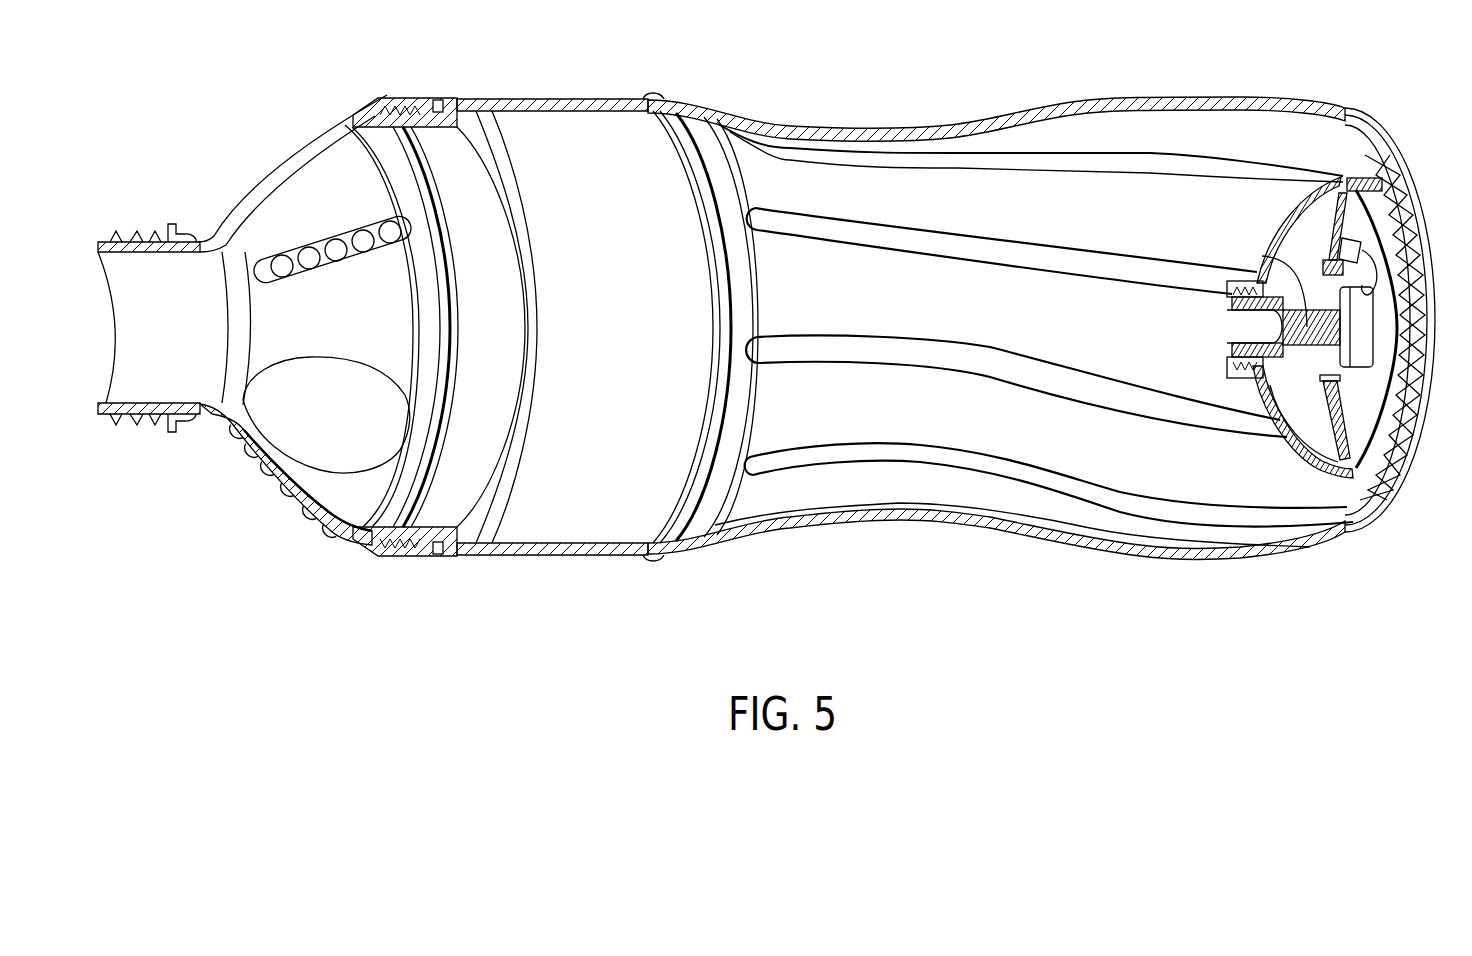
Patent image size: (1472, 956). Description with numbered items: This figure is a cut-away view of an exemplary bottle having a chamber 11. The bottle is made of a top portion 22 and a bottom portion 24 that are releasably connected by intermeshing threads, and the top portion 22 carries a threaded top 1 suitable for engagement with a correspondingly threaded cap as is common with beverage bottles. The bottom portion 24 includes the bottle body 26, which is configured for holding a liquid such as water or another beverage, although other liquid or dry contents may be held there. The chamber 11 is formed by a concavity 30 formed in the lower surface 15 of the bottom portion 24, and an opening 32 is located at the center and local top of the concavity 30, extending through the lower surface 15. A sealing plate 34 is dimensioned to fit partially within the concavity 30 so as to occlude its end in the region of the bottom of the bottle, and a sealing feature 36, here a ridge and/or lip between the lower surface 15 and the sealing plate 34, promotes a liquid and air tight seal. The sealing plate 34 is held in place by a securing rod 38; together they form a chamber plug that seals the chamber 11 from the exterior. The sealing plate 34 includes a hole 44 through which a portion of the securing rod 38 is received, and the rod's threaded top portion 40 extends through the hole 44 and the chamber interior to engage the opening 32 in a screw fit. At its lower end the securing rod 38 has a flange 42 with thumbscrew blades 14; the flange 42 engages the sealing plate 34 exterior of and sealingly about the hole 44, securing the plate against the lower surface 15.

The threaded top 1 is at (134, 264).
The chamber 11 is at (1320, 414).
The thumbscrew blades 14 is at (1372, 288).
The lower surface 15 is at (1283, 454).
The top portion 22 is at (357, 544).
The bottom portion 24 is at (620, 565).
The bottle body 26 is at (898, 220).
The concavity 30 is at (1278, 235).
The opening 32 is at (1208, 312).
The sealing plate 34 is at (1342, 474).
The sealing feature 36 is at (1343, 174).
The securing rod 38 is at (1262, 256).
The threaded top portion 40 is at (1224, 325).
The flange 42 is at (1358, 250).
The hole 44 is at (1323, 364).